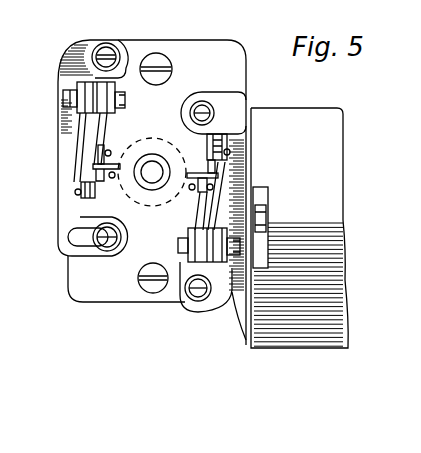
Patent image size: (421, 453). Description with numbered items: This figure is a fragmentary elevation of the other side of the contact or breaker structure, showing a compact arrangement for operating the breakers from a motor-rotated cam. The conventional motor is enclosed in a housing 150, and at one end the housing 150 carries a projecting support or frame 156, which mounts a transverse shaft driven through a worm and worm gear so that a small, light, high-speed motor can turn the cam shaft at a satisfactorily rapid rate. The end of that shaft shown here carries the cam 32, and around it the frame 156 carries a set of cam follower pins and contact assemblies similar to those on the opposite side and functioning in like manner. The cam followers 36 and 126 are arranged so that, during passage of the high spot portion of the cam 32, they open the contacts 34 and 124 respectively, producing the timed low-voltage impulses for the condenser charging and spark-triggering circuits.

The cam 32 is at (160, 141).
The contacts 34 is at (83, 199).
The cam follower 36 is at (104, 182).
The contacts 124 is at (219, 148).
The cam follower 126 is at (186, 180).
The housing 150 is at (317, 120).
The support or frame 156 is at (68, 271).